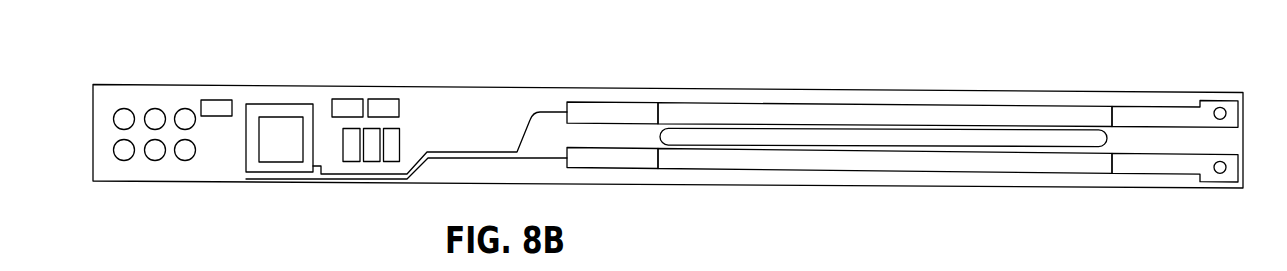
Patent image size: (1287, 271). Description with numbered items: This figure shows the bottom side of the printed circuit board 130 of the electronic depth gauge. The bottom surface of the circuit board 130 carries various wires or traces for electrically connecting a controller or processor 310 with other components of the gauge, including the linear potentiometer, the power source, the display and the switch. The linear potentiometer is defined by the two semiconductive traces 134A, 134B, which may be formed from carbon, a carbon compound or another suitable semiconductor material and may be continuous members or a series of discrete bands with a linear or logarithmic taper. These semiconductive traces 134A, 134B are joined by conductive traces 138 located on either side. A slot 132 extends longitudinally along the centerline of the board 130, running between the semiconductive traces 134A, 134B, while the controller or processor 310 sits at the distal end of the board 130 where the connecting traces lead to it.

The circuit board 130 is at (1095, 37).
The slot 132 is at (878, 138).
The semiconductive trace 134A is at (743, 113).
The semiconductive trace 134B is at (823, 162).
The conductive traces 138 is at (590, 117).
The integrated circuit 310 is at (295, 108).